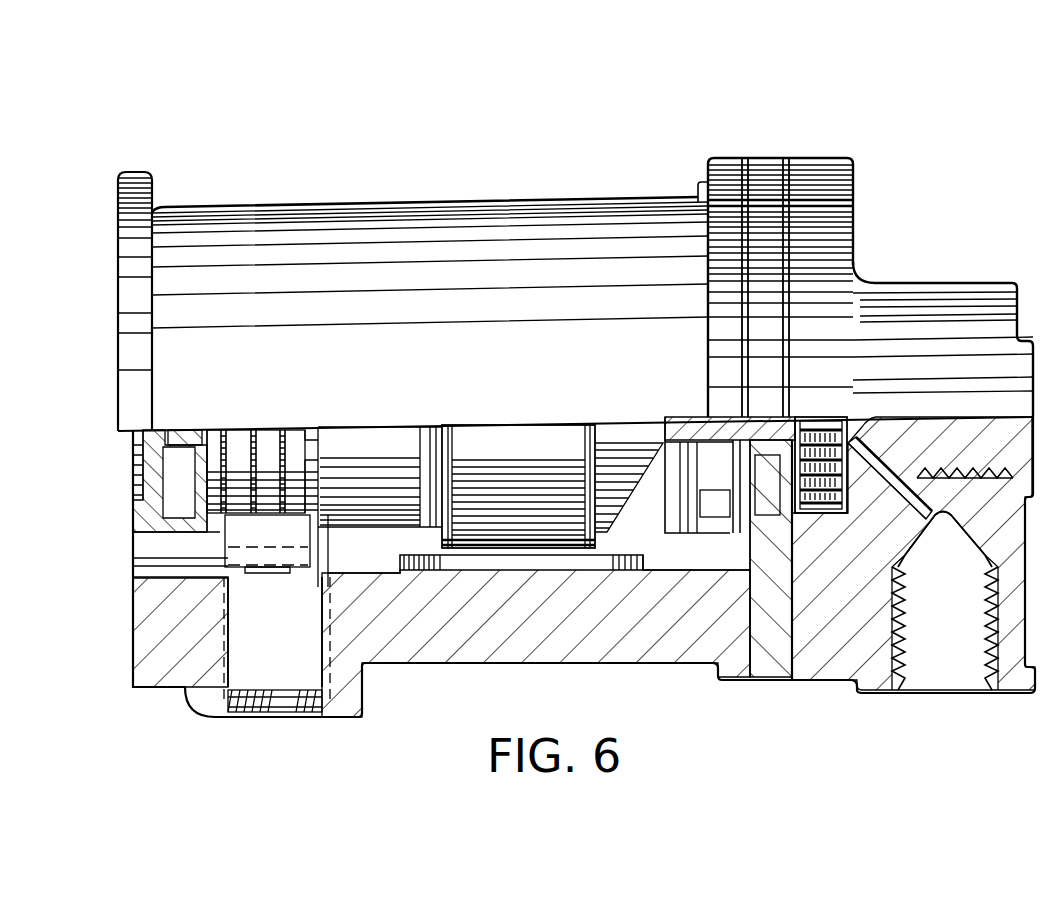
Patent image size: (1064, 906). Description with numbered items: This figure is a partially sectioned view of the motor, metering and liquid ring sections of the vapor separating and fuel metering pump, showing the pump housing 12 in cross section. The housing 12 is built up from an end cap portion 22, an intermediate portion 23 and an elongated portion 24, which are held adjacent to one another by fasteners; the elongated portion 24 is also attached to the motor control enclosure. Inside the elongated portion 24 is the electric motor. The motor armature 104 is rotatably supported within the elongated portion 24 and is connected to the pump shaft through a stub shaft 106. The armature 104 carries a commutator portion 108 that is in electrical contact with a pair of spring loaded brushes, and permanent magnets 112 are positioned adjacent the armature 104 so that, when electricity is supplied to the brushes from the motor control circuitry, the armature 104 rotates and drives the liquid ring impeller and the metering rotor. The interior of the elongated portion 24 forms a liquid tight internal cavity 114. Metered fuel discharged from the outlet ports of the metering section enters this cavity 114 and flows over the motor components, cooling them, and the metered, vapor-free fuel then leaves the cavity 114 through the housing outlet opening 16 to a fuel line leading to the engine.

The housing 12 is at (495, 114).
The outlet opening 16 is at (322, 717).
The end cap portion 22 is at (870, 270).
The intermediate portion 23 is at (757, 157).
The elongated portion 24 is at (368, 205).
The motor armature 104 is at (540, 449).
The stub shaft 106 is at (692, 412).
The commutator portion 108 is at (269, 440).
The permanent magnets 112 is at (428, 558).
The internal cavity 114 is at (648, 533).